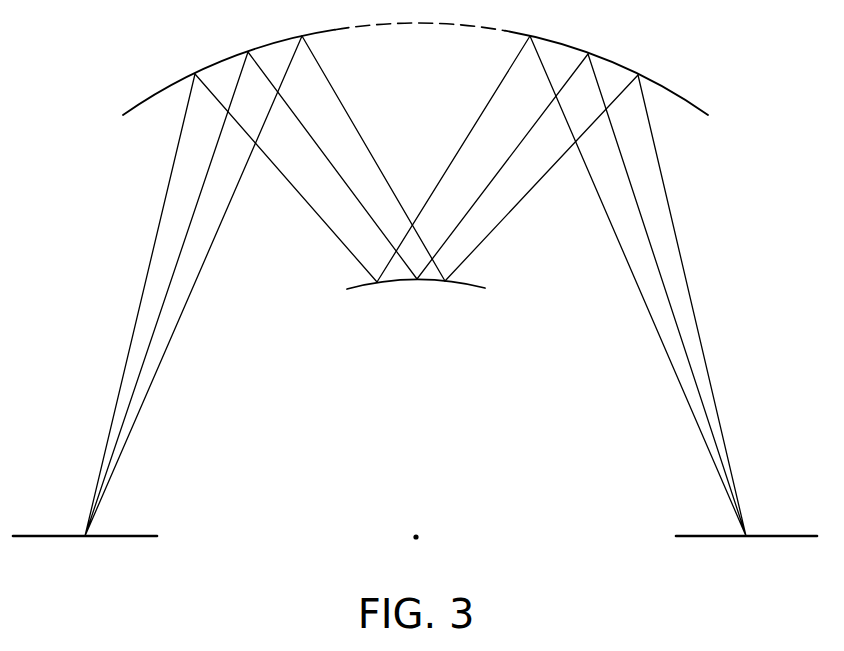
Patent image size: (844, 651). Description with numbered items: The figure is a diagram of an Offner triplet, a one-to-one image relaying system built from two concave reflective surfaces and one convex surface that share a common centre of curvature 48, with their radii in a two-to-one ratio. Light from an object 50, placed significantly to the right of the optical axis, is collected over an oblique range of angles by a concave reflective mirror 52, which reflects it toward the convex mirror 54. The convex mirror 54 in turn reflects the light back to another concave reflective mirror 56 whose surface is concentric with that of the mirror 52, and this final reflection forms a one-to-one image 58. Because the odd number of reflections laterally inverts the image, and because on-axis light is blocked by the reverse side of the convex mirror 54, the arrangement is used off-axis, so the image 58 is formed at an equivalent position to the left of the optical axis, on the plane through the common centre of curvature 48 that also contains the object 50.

The common centre of curvature 48 is at (420, 538).
The object 50 is at (701, 537).
The concave reflective mirror 52 is at (610, 60).
The convex mirror 54 is at (468, 289).
The concave reflective mirror 56 is at (225, 60).
The image 58 is at (135, 537).